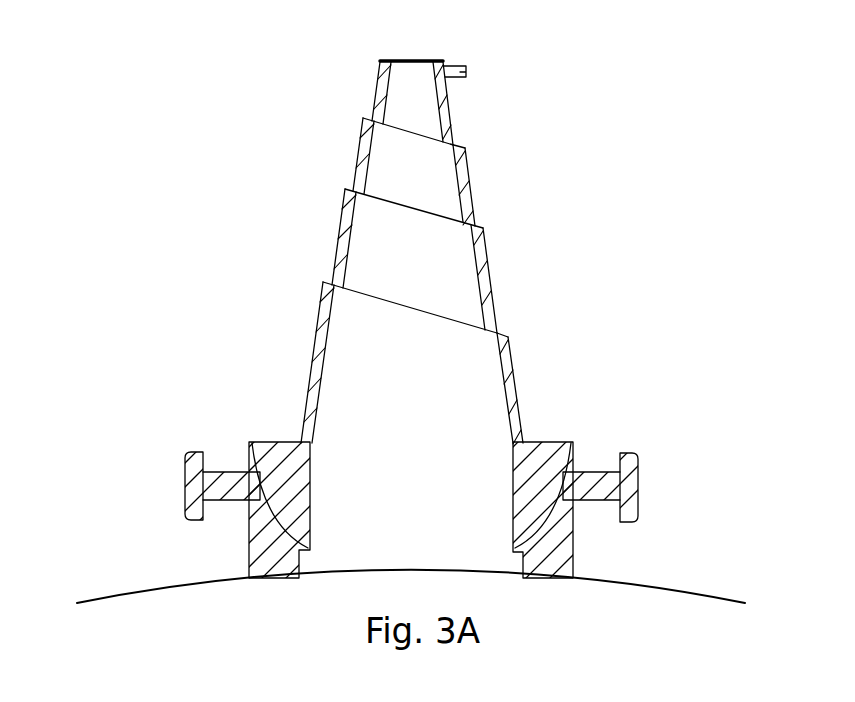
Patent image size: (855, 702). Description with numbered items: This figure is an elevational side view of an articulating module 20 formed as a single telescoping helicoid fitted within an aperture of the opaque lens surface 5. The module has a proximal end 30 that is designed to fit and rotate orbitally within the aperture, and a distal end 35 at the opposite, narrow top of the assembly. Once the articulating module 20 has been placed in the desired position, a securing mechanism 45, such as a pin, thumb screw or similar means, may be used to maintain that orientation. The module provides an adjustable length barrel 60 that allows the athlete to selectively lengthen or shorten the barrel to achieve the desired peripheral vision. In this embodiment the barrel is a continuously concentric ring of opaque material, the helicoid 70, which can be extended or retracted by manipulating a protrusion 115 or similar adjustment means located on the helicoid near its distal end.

The opaque lens surface 5 is at (658, 585).
The articulating module 20 is at (533, 465).
The proximal end 30 is at (407, 562).
The distal end 35 is at (395, 60).
The securing mechanism 45 is at (627, 482).
The adjustable length barrel 60 is at (313, 337).
The helicoid 70 is at (397, 257).
The protrusion 115 is at (465, 72).